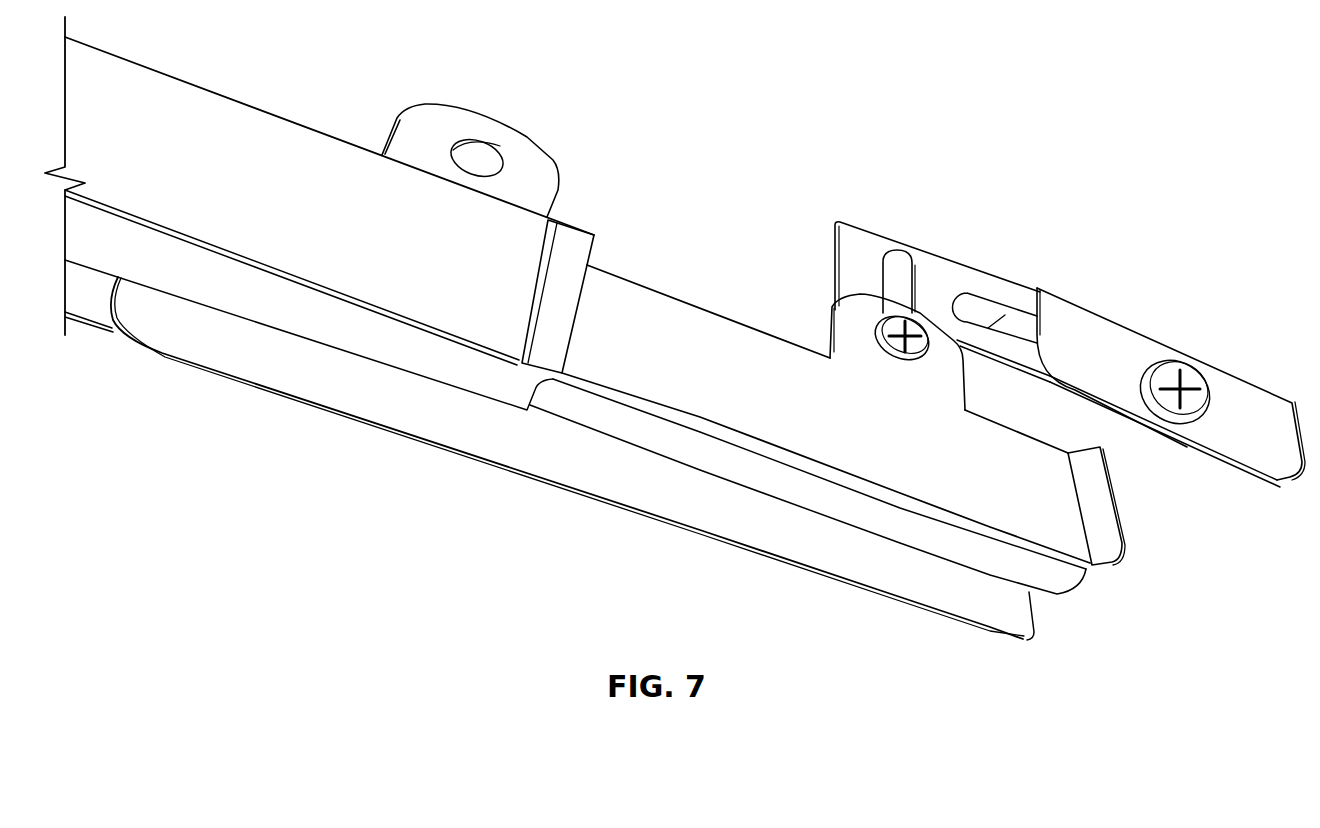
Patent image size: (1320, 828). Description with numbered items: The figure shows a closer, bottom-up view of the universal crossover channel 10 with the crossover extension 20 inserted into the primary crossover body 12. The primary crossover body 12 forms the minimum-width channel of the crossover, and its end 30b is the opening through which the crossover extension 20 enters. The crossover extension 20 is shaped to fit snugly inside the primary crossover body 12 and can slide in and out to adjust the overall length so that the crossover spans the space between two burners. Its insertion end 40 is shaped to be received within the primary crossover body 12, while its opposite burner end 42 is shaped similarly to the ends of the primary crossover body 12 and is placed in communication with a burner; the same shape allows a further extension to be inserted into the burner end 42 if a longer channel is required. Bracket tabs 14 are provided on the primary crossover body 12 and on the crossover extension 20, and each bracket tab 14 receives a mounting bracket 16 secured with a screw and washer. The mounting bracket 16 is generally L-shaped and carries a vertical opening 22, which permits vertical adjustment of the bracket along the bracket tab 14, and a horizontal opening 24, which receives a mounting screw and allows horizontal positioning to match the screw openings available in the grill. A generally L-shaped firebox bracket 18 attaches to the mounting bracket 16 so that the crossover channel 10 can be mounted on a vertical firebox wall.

The universal crossover channel 10 is at (945, 38).
The primary crossover body 12 is at (458, 276).
The bracket tab 14 is at (428, 117).
The mounting bracket 16 is at (928, 277).
The firebox bracket 18 is at (1114, 354).
The crossover extension 20 is at (820, 419).
The vertical opening 22 is at (898, 253).
The horizontal opening 24 is at (985, 312).
The end of the primary crossover body 30b is at (575, 253).
The insertion end 40 is at (617, 339).
The burner end 42 is at (1117, 498).